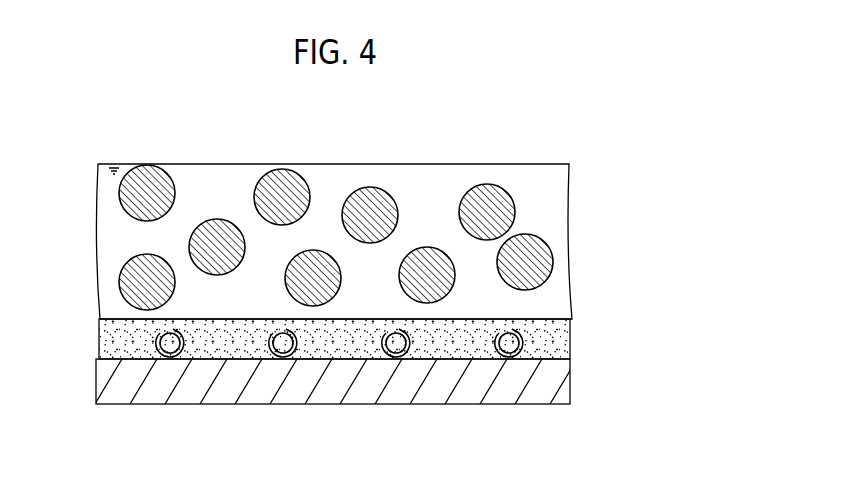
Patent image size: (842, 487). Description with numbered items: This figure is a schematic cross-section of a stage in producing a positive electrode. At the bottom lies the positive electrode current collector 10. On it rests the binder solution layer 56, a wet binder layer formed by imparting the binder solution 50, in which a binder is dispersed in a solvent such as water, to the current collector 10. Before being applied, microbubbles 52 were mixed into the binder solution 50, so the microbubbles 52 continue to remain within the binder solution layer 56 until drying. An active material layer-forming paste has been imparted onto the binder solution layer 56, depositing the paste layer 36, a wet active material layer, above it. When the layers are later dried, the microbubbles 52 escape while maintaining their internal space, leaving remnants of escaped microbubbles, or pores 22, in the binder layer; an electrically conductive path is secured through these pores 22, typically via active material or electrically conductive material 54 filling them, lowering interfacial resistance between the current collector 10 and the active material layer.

The remnants of escaped microbubbles (pores) 22 is at (282, 175).
The paste layer 36 is at (383, 213).
The binder solution layer 56 is at (573, 342).
The binder solution 50 is at (413, 391).
The microbubbles 52 is at (170, 346).
The electrically conductive material 54 is at (186, 345).
The current collector 10 is at (565, 380).